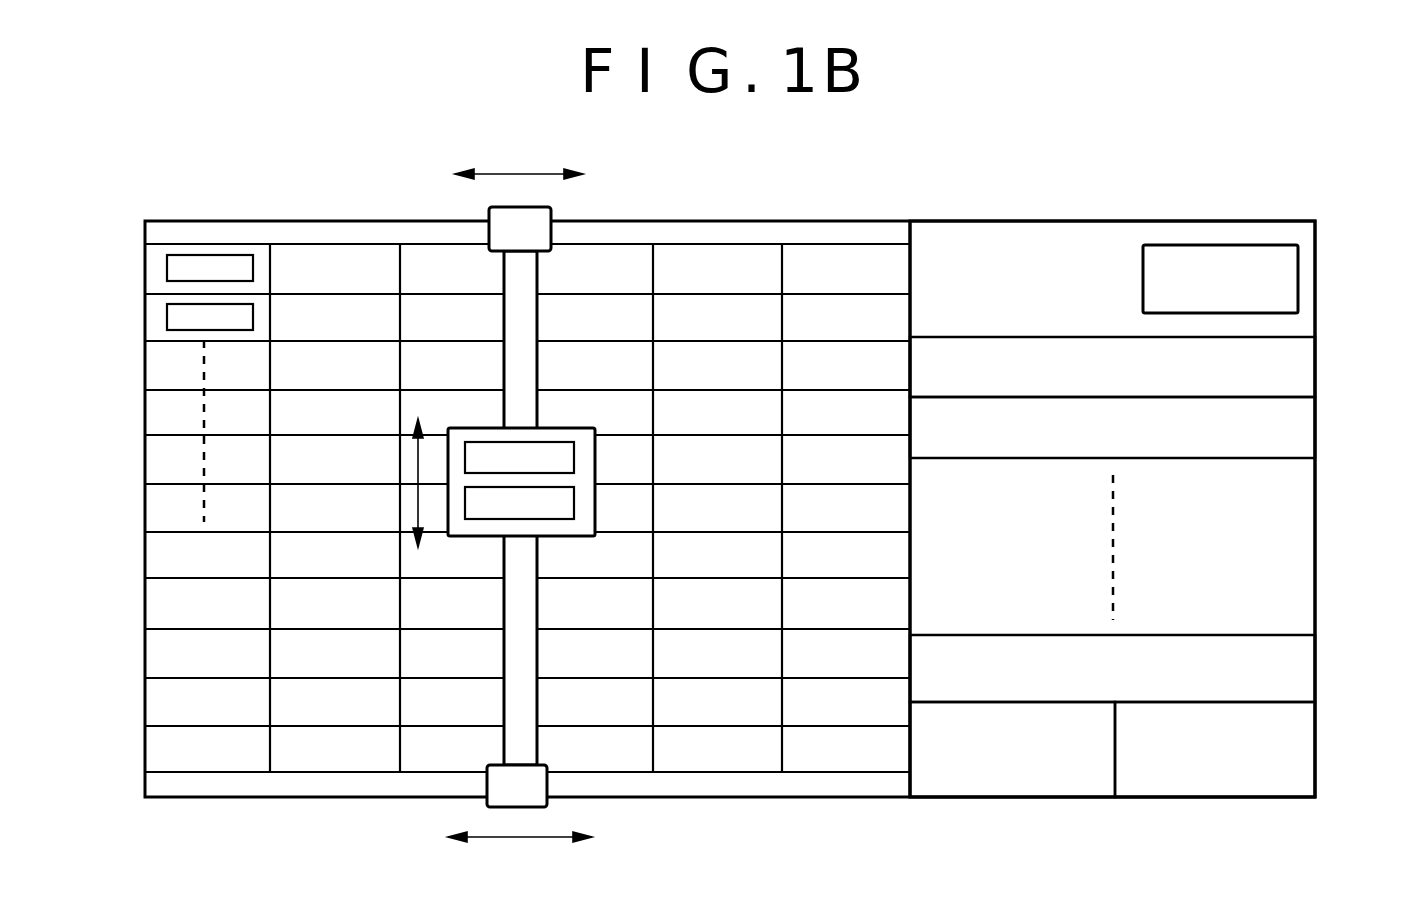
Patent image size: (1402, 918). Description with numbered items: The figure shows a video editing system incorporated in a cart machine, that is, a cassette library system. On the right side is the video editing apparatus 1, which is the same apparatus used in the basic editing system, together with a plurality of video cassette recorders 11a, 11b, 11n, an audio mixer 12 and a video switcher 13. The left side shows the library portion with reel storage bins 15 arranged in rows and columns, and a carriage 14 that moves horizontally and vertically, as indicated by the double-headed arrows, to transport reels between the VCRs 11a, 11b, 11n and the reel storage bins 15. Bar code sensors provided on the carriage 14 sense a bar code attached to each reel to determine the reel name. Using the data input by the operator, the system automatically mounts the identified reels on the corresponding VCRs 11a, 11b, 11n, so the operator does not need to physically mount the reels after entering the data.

The video editing apparatus 1 is at (1317, 271).
The video cassette recorder 11a is at (1303, 378).
The video cassette recorder 11b is at (1303, 434).
The video cassette recorder 11n is at (1300, 674).
The audio mixer 12 is at (1027, 789).
The video switcher 13 is at (1228, 789).
The carriage 14 is at (570, 428).
The reel storage bins 15 is at (152, 371).